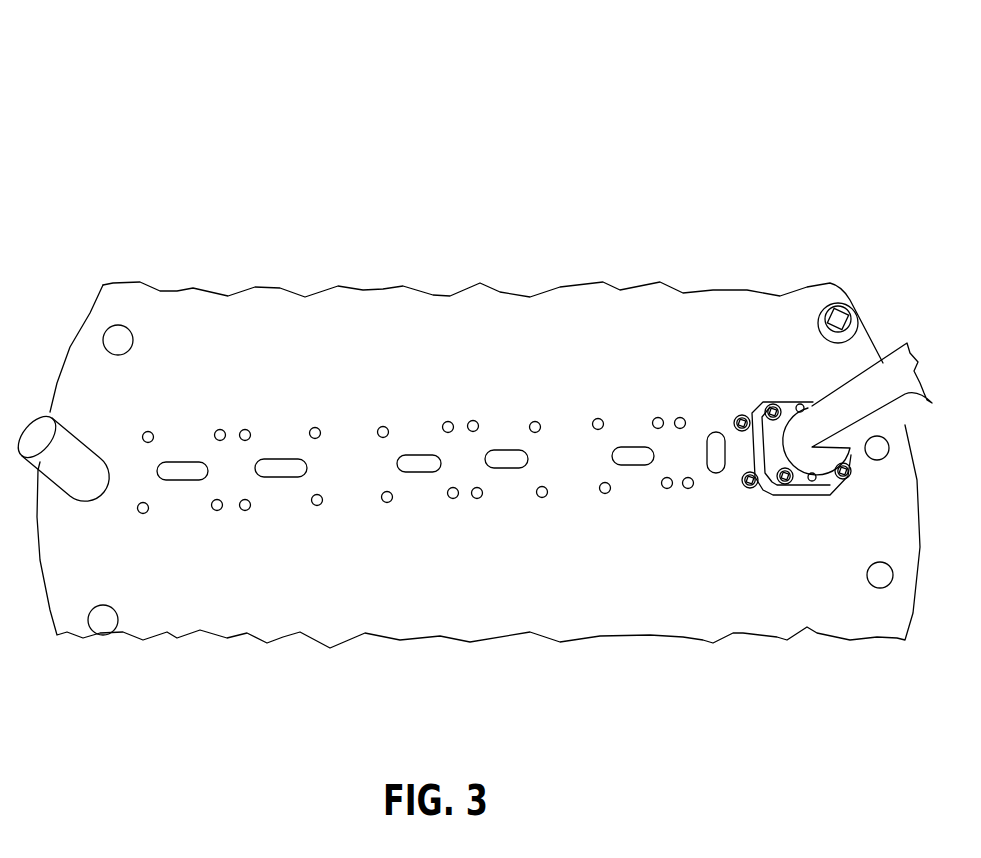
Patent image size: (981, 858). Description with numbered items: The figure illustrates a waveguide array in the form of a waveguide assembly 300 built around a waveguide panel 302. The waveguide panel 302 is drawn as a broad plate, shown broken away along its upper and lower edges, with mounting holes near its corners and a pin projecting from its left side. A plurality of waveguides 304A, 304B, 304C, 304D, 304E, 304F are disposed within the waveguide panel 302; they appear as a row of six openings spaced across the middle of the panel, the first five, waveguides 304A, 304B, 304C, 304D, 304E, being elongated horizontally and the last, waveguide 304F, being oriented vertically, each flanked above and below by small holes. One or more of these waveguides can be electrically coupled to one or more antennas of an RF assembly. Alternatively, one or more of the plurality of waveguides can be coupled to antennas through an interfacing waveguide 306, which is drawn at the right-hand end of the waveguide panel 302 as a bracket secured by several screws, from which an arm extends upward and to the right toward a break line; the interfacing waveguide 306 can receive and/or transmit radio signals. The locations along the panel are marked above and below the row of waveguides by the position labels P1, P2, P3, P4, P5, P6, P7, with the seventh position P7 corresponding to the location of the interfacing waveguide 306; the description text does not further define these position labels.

The waveguide assembly 300 is at (162, 75).
The waveguide panel 302 is at (807, 318).
The waveguide 304A is at (190, 462).
The waveguide 304B is at (293, 460).
The waveguide 304C is at (427, 456).
The waveguide 304D is at (512, 452).
The waveguide 304E is at (637, 447).
The waveguide 304F is at (722, 432).
The interfacing waveguide 306 is at (822, 478).
The mounting position 1 P1 is at (182, 466).
The mounting position 2 P2 is at (281, 463).
The mounting position 3 P3 is at (418, 463).
The mounting position 4 P4 is at (508, 463).
The mounting position 5 P5 is at (633, 463).
The mounting position 6 P6 is at (704, 462).
The mounting position 7 P7 is at (796, 459).